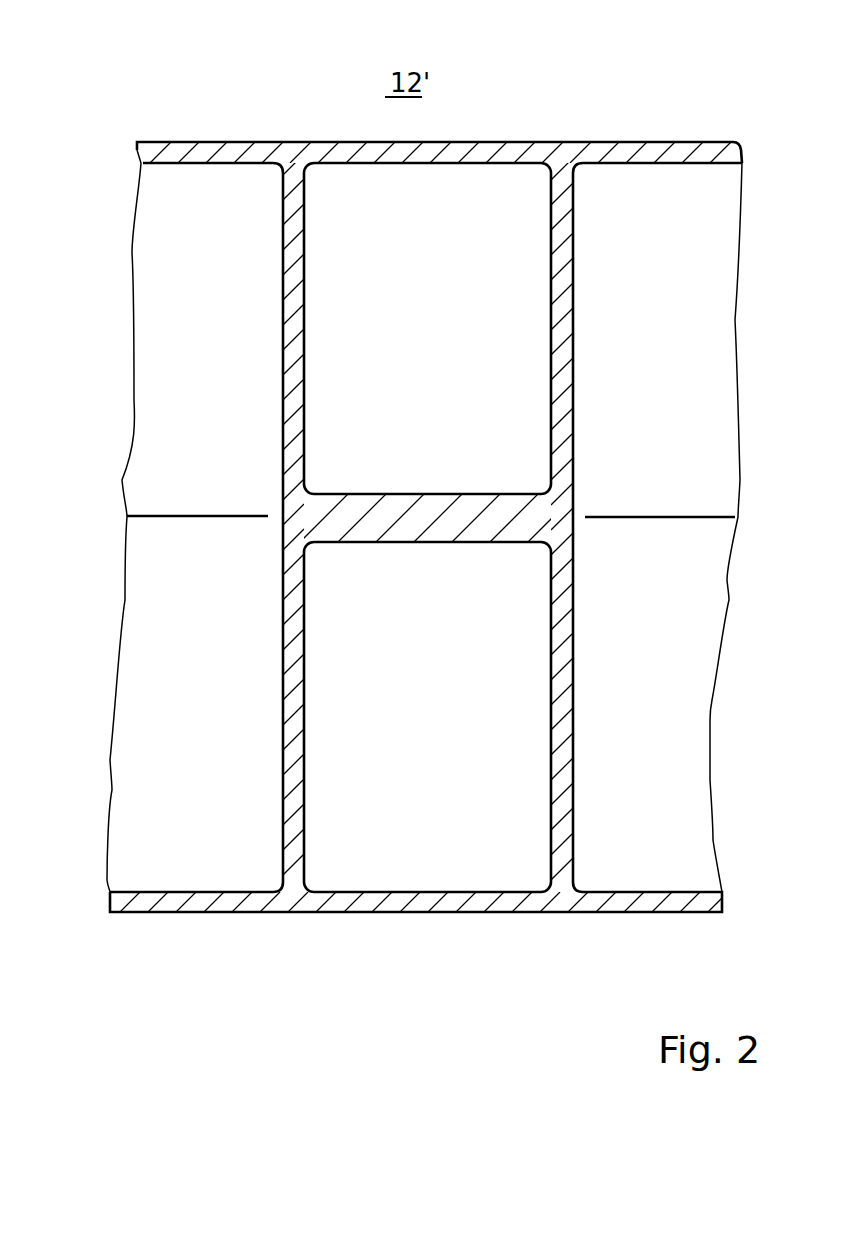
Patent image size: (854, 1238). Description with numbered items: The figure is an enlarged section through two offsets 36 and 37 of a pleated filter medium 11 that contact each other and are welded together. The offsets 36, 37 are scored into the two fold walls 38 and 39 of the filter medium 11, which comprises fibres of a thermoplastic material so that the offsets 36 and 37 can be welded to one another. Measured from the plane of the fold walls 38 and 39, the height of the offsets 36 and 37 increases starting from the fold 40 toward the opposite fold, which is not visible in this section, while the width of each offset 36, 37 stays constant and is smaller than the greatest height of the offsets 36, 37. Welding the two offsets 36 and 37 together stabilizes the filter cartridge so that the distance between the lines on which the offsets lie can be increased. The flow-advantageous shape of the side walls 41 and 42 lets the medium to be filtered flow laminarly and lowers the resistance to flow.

The filter medium 11 is at (698, 736).
The offset 36 is at (285, 399).
The offset 37 is at (290, 641).
The fold wall 38 is at (148, 150).
The fold wall 39 is at (118, 898).
The fold 40 is at (150, 517).
The side wall 41 is at (281, 293).
The side wall 42 is at (285, 744).